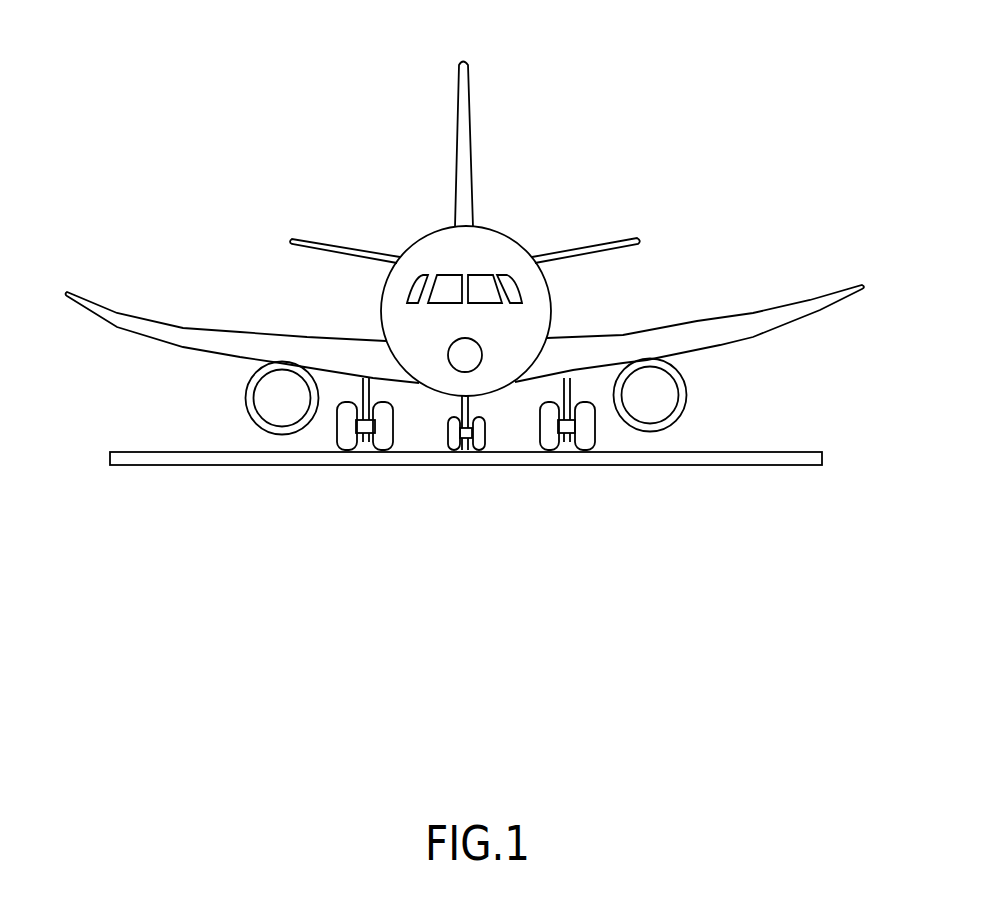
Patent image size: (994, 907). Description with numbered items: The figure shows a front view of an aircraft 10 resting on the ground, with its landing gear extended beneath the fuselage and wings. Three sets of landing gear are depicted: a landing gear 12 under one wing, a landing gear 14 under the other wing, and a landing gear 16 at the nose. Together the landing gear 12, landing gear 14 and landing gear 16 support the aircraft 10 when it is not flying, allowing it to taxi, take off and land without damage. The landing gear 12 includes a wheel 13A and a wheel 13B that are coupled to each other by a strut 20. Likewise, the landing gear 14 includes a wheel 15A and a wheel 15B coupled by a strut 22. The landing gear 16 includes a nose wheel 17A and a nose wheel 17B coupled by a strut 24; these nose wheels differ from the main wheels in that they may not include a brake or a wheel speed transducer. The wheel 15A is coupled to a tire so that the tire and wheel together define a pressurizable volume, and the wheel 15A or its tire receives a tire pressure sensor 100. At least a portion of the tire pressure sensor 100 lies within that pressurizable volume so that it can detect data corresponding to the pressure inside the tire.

The aircraft 10 is at (314, 148).
The landing gear 12 is at (606, 433).
The wheel 13A is at (596, 446).
The wheel 13B is at (555, 401).
The landing gear 14 is at (328, 435).
The wheel 15A is at (338, 441).
The wheel 15B is at (400, 443).
The landing gear 16 is at (490, 417).
The nose wheel 17A is at (487, 447).
The nose wheel 17B is at (448, 450).
The strut 20 is at (567, 442).
The strut 22 is at (367, 442).
The strut 24 is at (463, 442).
The tire pressure sensor 100 is at (340, 404).